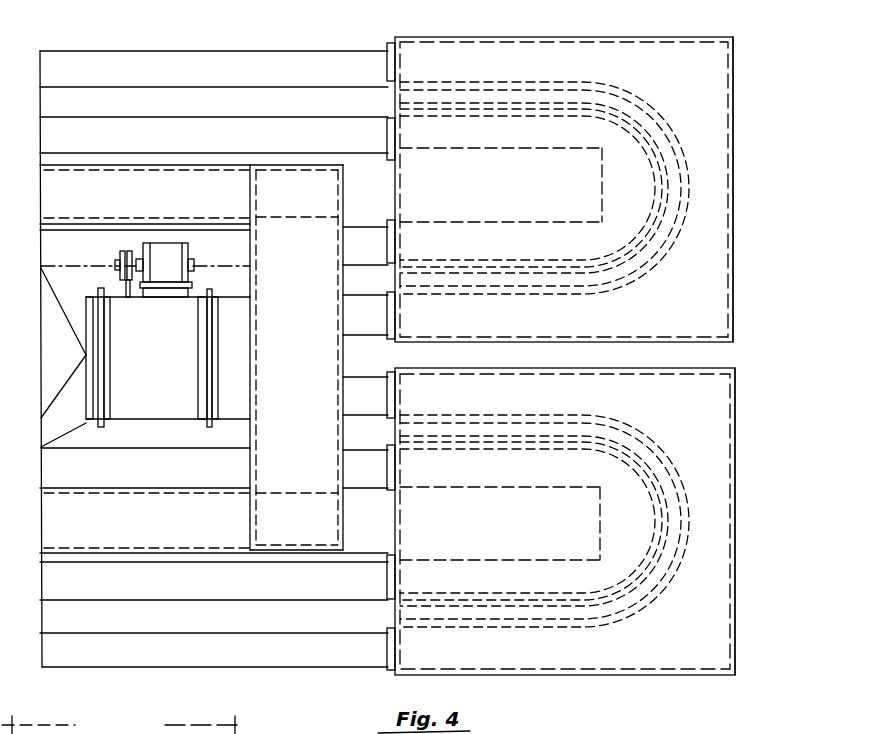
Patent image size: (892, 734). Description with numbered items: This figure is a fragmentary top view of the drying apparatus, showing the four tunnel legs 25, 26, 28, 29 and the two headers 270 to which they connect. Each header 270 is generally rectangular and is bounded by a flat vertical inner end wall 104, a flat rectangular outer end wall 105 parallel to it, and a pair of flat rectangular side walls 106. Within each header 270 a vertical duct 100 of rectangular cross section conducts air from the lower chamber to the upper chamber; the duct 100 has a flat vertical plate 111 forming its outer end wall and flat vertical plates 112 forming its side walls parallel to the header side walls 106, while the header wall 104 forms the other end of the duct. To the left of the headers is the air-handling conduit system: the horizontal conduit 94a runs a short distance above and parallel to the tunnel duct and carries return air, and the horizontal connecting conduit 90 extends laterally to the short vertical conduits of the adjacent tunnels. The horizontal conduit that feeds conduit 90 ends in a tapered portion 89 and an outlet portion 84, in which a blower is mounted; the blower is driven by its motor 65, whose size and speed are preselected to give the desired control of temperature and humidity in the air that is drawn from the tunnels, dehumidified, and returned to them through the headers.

The tunnel leg 25 is at (305, 50).
The tunnel leg 26 is at (358, 336).
The tunnel leg 28 is at (357, 490).
The tunnel leg 29 is at (305, 667).
The motor 65 is at (152, 243).
The outlet portion 84 is at (168, 357).
The tapered portion 89 is at (62, 426).
The horizontal connecting conduit 90 is at (343, 258).
The horizontal conduit 94a is at (208, 165).
The vertical duct 100 is at (530, 371).
The inner end wall 104 is at (395, 190).
The outer end wall 105 is at (735, 157).
The side walls 106 is at (530, 37).
The outer end wall plate 111 is at (604, 176).
The side wall plates 112 is at (520, 224).
The header 270 is at (735, 82).